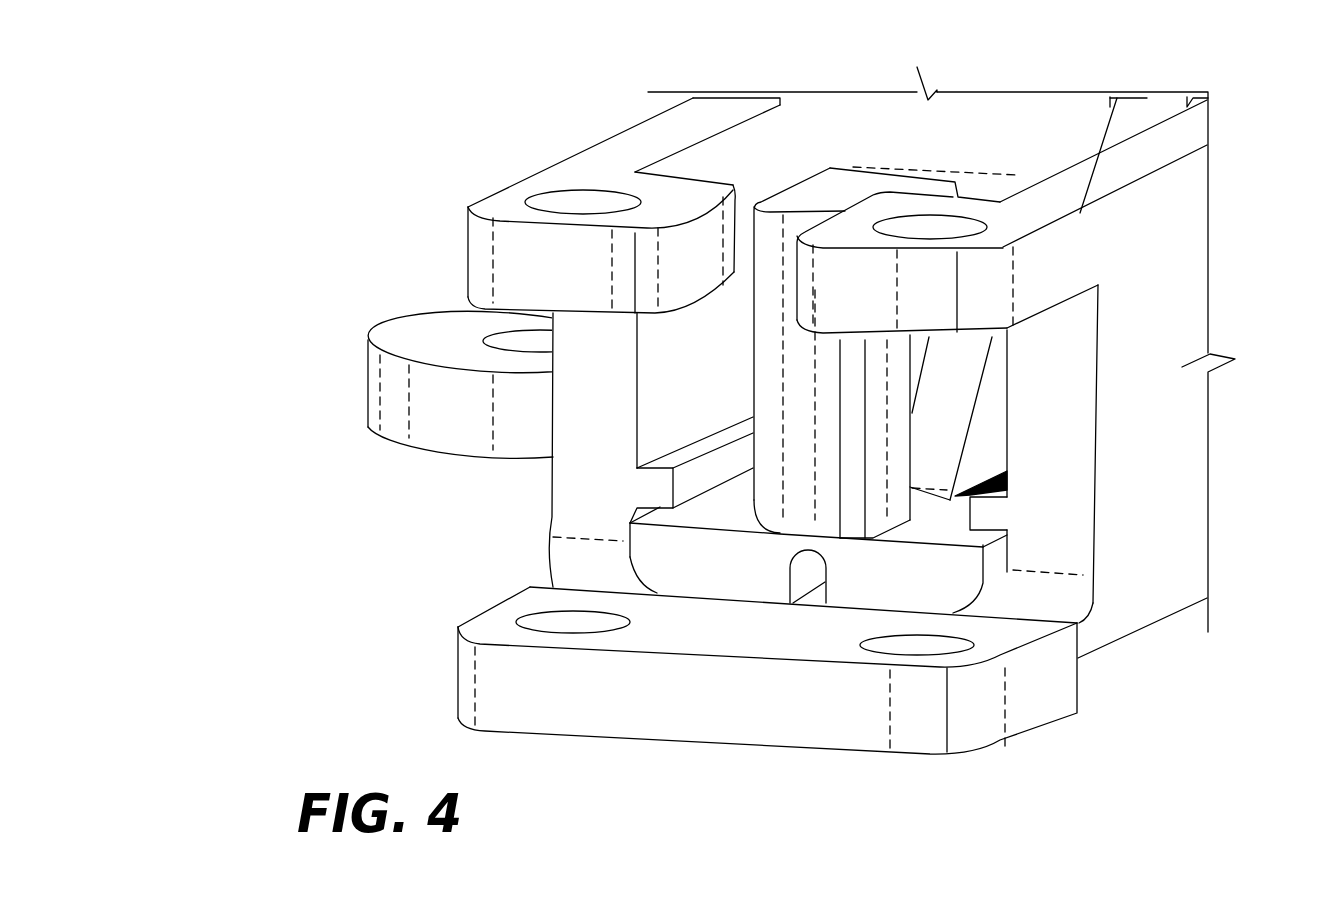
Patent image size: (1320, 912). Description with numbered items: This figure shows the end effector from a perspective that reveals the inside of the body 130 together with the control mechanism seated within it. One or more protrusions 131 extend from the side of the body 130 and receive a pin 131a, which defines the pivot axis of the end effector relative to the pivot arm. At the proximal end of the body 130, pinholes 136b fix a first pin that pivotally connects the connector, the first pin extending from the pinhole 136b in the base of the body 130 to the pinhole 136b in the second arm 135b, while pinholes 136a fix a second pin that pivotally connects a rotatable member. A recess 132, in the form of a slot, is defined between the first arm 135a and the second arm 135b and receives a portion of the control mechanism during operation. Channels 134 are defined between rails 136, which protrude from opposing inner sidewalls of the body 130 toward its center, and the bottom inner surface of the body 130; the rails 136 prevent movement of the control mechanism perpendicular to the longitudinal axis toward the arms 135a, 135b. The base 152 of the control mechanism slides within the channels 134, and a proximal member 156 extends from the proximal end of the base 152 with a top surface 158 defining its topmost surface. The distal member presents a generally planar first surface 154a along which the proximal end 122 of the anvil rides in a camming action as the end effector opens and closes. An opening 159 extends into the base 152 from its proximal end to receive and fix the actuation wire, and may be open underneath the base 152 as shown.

The proximal end 122 is at (1027, 127).
The body 130 is at (1163, 457).
The protrusion 131 is at (425, 400).
The pin 131a is at (507, 338).
The recess 132 is at (750, 240).
The channel 134 is at (636, 507).
The first arm 135a is at (492, 203).
The second arm 135b is at (897, 204).
The rail 136 is at (647, 488).
The pinhole 136a is at (562, 202).
The pinhole 136b is at (955, 225).
The base 152 is at (925, 575).
The first surface 154a is at (952, 382).
The proximal member 156 is at (771, 242).
The top surface 158 is at (856, 182).
The opening 159 is at (803, 575).